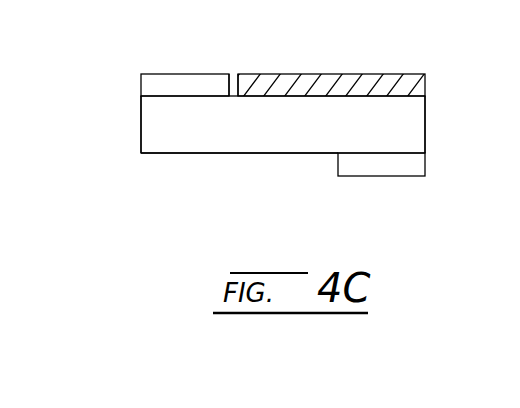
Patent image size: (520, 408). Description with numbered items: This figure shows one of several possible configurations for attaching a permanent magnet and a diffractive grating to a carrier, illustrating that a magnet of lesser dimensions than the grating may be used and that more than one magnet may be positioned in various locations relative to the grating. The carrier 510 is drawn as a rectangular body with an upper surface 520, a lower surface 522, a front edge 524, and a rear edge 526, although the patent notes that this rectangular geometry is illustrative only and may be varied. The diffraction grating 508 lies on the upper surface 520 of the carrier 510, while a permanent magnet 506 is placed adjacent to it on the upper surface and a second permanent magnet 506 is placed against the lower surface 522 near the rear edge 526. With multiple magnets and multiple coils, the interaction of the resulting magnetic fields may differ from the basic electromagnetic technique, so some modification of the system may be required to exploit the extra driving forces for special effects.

The permanent magnet 506 is at (170, 80).
The diffraction grating 508 is at (360, 75).
The carrier 510 is at (162, 150).
The upper surface 520 is at (232, 90).
The lower surface 522 is at (257, 155).
The front edge 524 is at (141, 135).
The rear edge 526 is at (425, 118).